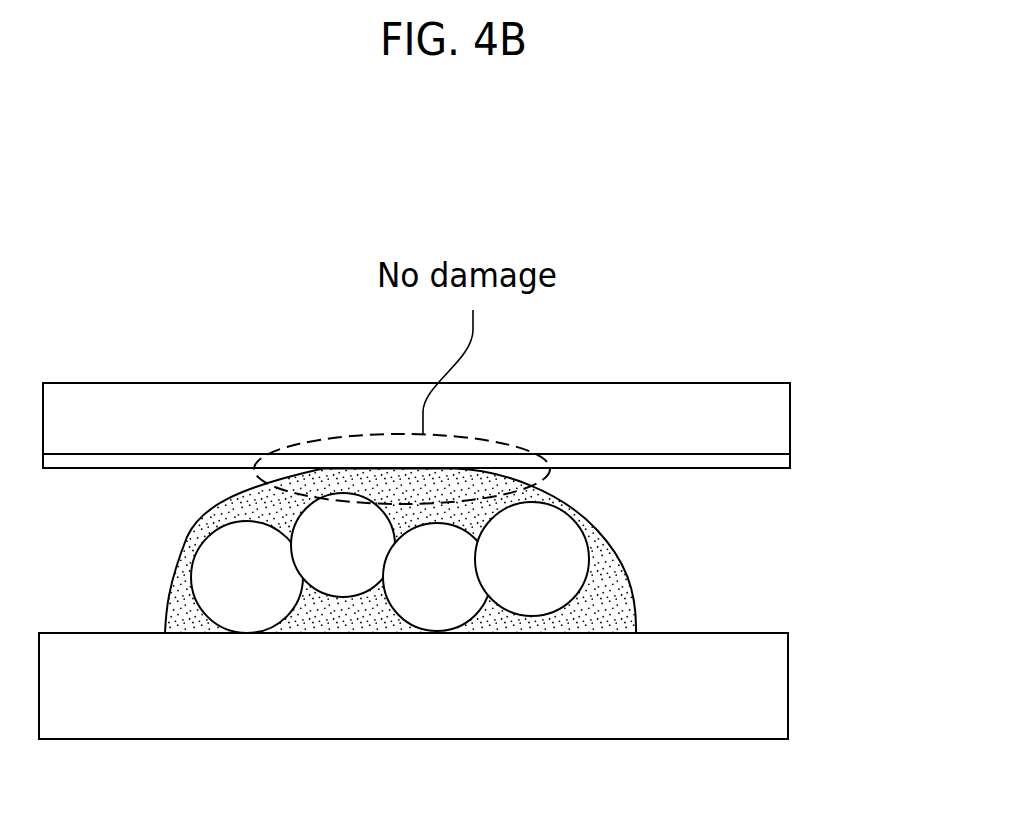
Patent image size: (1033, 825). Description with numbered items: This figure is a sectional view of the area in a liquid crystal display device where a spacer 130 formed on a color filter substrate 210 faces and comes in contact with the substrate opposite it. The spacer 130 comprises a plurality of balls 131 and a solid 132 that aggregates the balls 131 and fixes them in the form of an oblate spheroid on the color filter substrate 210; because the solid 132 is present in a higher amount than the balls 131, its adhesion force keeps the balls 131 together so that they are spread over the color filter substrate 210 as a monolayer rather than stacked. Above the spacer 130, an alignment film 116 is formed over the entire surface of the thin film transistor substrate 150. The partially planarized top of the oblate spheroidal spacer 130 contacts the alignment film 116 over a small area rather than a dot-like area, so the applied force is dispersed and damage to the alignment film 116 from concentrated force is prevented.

The alignment film 116 is at (780, 460).
The spacer 130 is at (743, 520).
The balls 131 is at (585, 578).
The solid 132 is at (600, 540).
The thin film transistor substrate 150 is at (775, 407).
The color filter substrate 210 is at (773, 678).